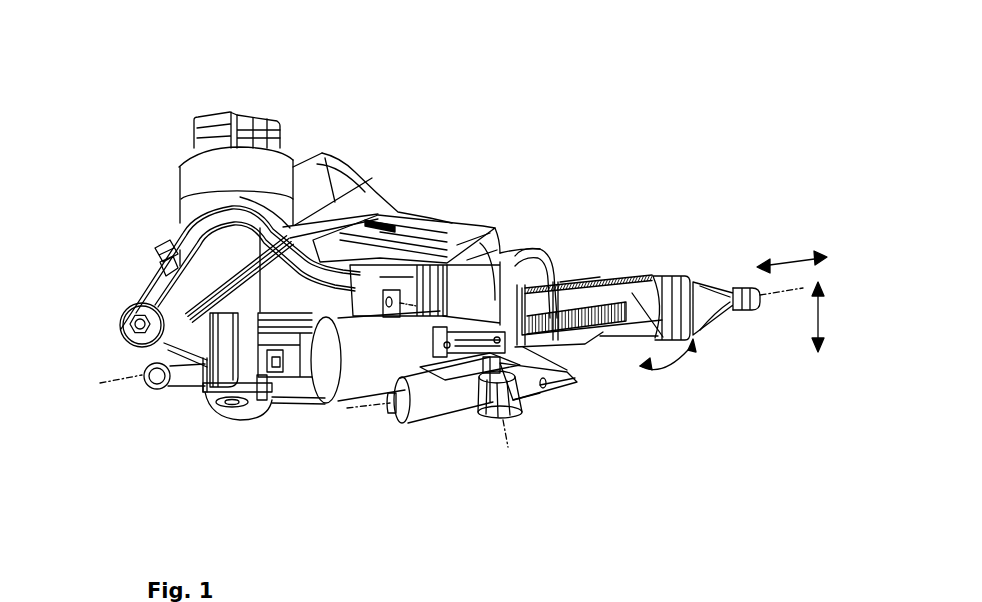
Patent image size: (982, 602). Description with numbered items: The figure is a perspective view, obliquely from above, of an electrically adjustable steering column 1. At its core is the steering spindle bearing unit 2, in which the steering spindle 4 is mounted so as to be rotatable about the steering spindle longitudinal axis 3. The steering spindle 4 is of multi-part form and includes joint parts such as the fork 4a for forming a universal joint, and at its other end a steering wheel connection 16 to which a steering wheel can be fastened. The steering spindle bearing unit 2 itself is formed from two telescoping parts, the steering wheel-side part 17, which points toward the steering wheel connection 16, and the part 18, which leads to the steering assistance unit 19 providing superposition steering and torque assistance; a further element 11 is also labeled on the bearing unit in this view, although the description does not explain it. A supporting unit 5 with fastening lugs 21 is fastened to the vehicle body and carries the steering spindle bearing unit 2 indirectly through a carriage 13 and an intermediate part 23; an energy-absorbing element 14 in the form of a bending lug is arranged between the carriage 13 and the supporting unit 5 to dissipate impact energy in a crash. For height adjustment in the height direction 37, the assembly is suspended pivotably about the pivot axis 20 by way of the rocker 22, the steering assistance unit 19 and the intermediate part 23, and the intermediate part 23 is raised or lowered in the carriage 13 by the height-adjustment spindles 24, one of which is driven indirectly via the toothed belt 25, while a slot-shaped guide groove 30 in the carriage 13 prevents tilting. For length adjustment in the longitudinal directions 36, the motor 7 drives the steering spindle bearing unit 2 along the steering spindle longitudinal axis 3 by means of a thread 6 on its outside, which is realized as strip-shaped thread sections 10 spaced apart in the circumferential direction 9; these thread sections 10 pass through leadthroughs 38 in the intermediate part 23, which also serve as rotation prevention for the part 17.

The steering column 1 is at (522, 35).
The steering spindle bearing unit 2 is at (652, 258).
The steering spindle longitudinal axis 3 is at (117, 380).
The steering spindle 4 is at (205, 393).
The fork 4a is at (160, 392).
The supporting unit 5 is at (350, 216).
The thread 6 is at (603, 262).
The motor 7 is at (438, 403).
The circumferential direction 9 is at (668, 372).
The thread sections 10 is at (600, 270).
The jacket tube 11 is at (530, 278).
The carriage 13 is at (495, 297).
The energy-absorbing element 14 is at (393, 240).
The steering wheel connection 16 is at (749, 307).
The steering wheel-side part 17 is at (690, 340).
The part of the steering spindle bearing unit 18 is at (343, 363).
The steering assistance unit 19 is at (252, 430).
The pivot axis 20 is at (133, 330).
The fastening lugs 21 is at (323, 155).
The rocker 22 is at (188, 357).
The intermediate part 23 is at (547, 392).
The height-adjustment spindles 24 is at (485, 412).
The toothed belt 25 is at (527, 403).
The guide groove 30 is at (440, 328).
The longitudinal directions 36 is at (788, 260).
The height direction 37 is at (823, 330).
The leadthroughs 38 is at (573, 278).